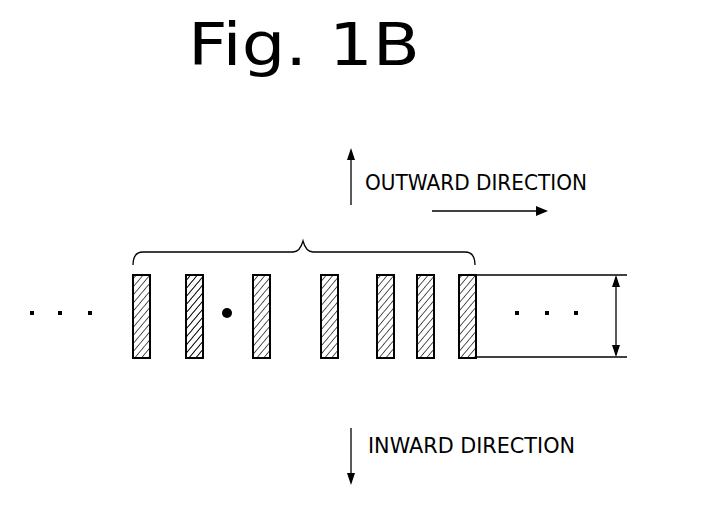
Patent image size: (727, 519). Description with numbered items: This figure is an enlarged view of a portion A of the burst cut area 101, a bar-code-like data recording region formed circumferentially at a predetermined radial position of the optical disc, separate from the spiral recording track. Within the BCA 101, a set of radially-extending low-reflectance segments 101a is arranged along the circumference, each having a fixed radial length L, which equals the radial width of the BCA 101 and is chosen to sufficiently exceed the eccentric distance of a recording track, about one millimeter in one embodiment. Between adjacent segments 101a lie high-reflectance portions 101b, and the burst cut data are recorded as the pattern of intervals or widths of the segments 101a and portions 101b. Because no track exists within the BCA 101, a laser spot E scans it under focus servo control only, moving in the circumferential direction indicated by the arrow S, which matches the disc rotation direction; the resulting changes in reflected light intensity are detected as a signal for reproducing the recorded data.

The burst cut area (BCA) 101 is at (71, 233).
The low-reflectance segments 101a is at (193, 358).
The high-reflectance portions 101b is at (231, 345).
The laser spot E is at (227, 308).
The portion A is at (304, 237).
The length L is at (626, 316).
The arrow S is at (501, 212).